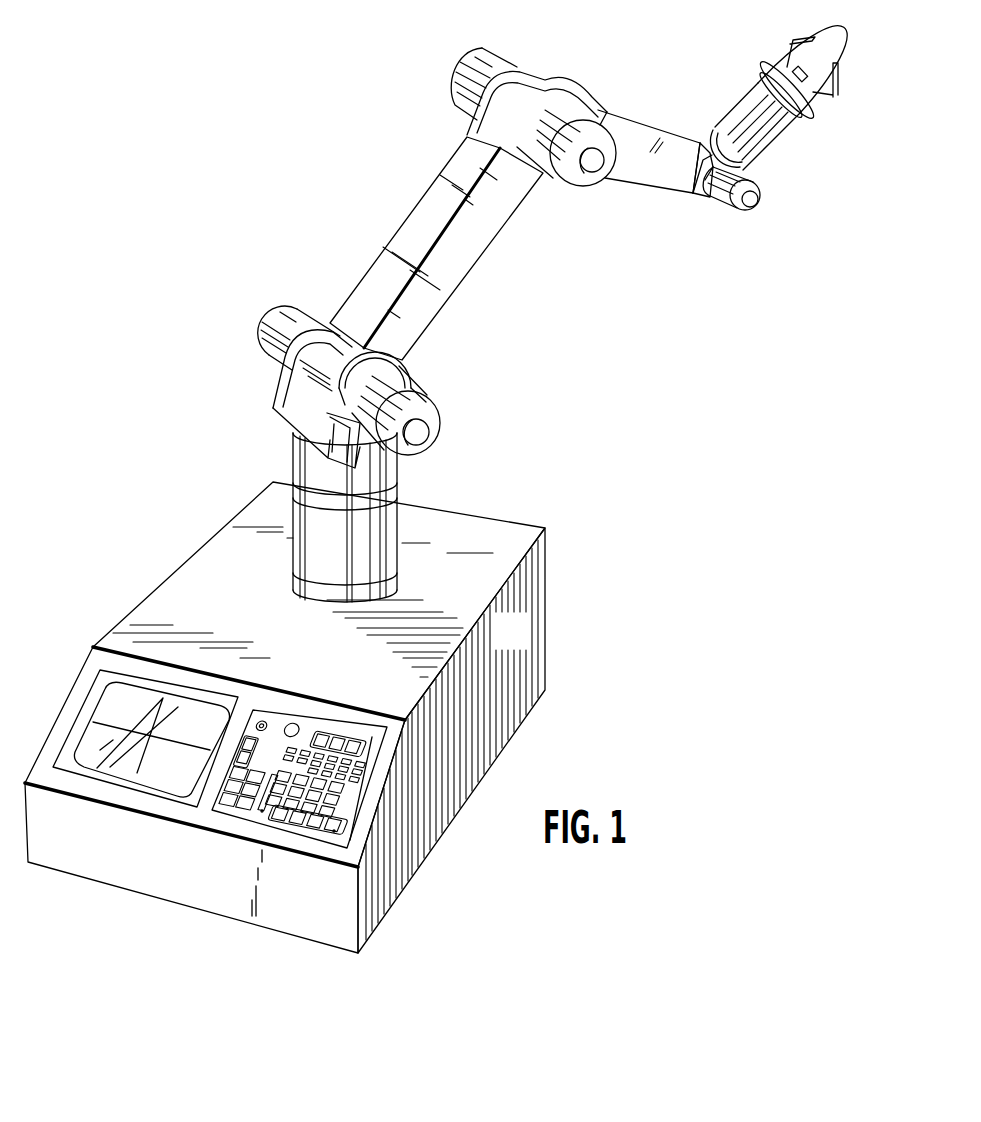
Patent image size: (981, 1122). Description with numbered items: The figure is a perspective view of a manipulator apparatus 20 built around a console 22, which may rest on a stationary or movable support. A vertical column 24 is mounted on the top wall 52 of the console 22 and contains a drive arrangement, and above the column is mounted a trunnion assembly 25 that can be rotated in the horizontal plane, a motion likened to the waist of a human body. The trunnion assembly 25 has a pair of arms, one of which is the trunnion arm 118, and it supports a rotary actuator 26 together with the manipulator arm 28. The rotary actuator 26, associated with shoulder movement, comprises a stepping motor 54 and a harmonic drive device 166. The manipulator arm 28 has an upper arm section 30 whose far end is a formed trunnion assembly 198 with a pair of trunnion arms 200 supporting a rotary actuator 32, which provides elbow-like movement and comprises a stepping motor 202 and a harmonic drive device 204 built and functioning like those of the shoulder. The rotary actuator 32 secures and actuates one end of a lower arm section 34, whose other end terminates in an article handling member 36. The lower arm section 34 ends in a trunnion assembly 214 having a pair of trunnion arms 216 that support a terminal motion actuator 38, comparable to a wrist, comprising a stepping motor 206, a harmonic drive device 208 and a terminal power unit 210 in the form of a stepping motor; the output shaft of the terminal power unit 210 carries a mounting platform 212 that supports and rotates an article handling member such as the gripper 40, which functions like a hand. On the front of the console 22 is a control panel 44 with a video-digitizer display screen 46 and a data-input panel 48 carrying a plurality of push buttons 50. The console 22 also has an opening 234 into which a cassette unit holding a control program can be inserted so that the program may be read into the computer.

The manipulator apparatus 20 is at (406, 948).
The console 22 is at (500, 642).
The vertical column 24 is at (370, 552).
The trunnion assembly 25 is at (262, 417).
The rotary actuator 26 is at (250, 331).
The manipulator arm 28 is at (496, 284).
The upper arm section 30 is at (443, 208).
The rotary actuator 32 is at (443, 67).
The lower arm section 34 is at (640, 140).
The article handling member 36 is at (751, 60).
The motion actuator 38 is at (727, 222).
The gripper 40 is at (835, 95).
The control panel 44 is at (372, 846).
The video-digitizer display screen 46 is at (112, 712).
The data-input panel 48 is at (371, 742).
The push buttons 50 is at (332, 833).
The top wall 52 is at (168, 607).
The stepping motor 54 is at (290, 320).
The trunnion arm 118 is at (274, 378).
The harmonic drive device 166 is at (397, 390).
The trunnion assembly 198 is at (546, 188).
The trunnion arms 200 is at (472, 120).
The stepping motor 202 is at (488, 64).
The harmonic drive device 204 is at (588, 183).
The stepping motor 206 is at (688, 135).
The harmonic drive device 208 is at (757, 212).
The terminal power unit 210 is at (772, 152).
The platform 212 is at (812, 115).
The trunnion assembly 214 is at (686, 207).
The trunnion arms 216 is at (707, 196).
The opening 234 is at (258, 813).